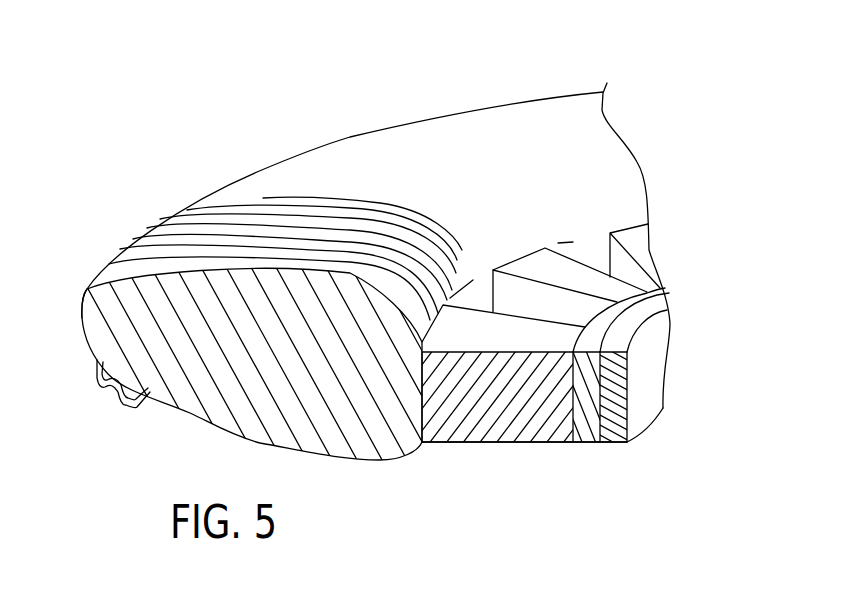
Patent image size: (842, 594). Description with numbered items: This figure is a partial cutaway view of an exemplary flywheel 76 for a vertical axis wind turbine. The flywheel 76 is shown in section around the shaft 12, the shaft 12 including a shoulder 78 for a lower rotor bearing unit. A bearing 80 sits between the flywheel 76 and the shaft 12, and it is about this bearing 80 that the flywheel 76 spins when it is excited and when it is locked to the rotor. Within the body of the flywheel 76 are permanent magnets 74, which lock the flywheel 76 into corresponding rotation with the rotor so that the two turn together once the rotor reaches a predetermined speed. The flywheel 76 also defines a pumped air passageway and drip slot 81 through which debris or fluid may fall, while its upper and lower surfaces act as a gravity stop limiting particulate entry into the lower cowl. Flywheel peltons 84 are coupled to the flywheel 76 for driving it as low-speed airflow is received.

The shaft 12 is at (645, 343).
The permanent magnets 74 is at (535, 403).
The flywheel 76 is at (326, 99).
The shoulder 78 is at (474, 480).
The bearing 80 is at (627, 442).
The pumped air passageway and drip slot 81 is at (590, 232).
The flywheel peltons 84 is at (97, 377).